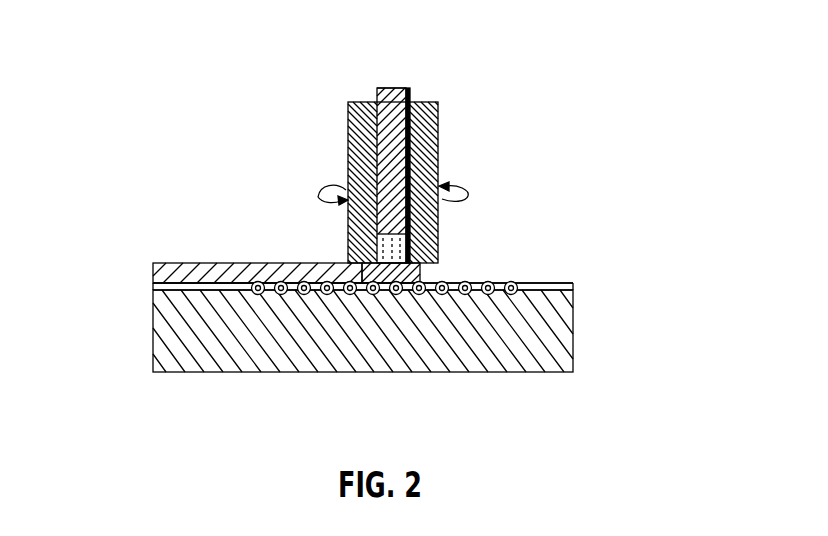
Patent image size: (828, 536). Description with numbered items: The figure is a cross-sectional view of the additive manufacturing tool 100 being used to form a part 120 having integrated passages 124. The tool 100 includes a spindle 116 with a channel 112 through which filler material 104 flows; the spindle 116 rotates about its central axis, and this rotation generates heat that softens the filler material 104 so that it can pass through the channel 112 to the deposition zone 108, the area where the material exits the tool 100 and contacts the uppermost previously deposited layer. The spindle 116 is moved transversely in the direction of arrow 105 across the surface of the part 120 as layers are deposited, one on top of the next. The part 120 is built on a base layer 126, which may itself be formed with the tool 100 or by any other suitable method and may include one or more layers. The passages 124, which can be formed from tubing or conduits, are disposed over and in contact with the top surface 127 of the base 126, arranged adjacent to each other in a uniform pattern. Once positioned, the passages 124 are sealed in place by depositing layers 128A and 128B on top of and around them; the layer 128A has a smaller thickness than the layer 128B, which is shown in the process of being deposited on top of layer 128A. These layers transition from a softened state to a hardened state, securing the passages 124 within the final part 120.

The additive manufacturing tool 100 is at (400, 146).
The filler material 104 is at (348, 136).
The arrow 105 is at (440, 133).
The deposition zone 108 is at (422, 275).
The channel 112 is at (389, 86).
The spindle 116 is at (348, 226).
The part 120 is at (373, 326).
The passages 124 is at (350, 296).
The base layer 126 is at (153, 337).
The top surface 127 is at (230, 285).
The layer 128A is at (153, 286).
The layer 128B is at (153, 276).